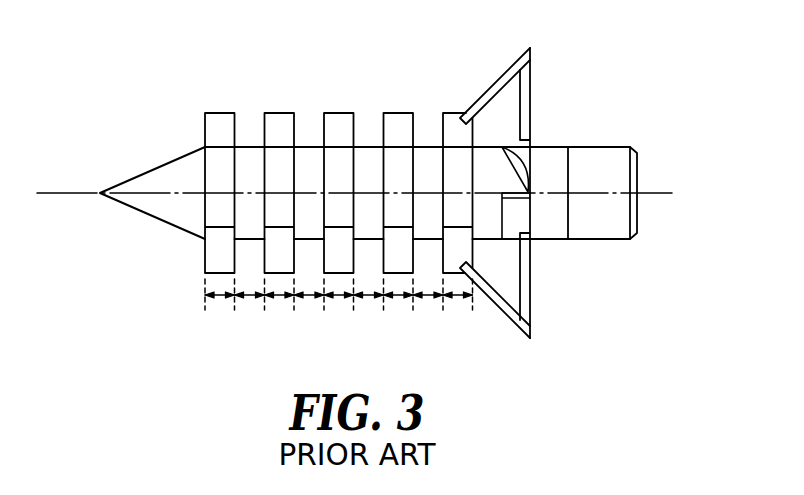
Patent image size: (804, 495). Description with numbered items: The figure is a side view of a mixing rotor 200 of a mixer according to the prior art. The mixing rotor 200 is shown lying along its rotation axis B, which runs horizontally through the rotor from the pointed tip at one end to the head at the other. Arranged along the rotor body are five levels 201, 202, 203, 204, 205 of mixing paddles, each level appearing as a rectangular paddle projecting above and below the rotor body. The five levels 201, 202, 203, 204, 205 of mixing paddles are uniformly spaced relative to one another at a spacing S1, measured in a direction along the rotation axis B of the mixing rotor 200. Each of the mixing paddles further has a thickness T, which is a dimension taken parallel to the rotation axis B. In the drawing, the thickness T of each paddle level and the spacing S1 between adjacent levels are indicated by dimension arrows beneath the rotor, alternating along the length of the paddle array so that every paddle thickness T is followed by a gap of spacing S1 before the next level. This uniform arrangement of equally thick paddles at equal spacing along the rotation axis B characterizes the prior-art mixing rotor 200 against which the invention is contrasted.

The mixing rotor 200 is at (149, 82).
The first level of mixing paddles 201 is at (453, 126).
The second level of mixing paddles 202 is at (398, 126).
The third level of mixing paddles 203 is at (340, 126).
The fourth level of mixing paddles 204 is at (280, 127).
The fifth level of mixing paddles 205 is at (222, 127).
The rotation axis B is at (62, 192).
The thickness T is at (457, 298).
The spacing S1 is at (426, 298).